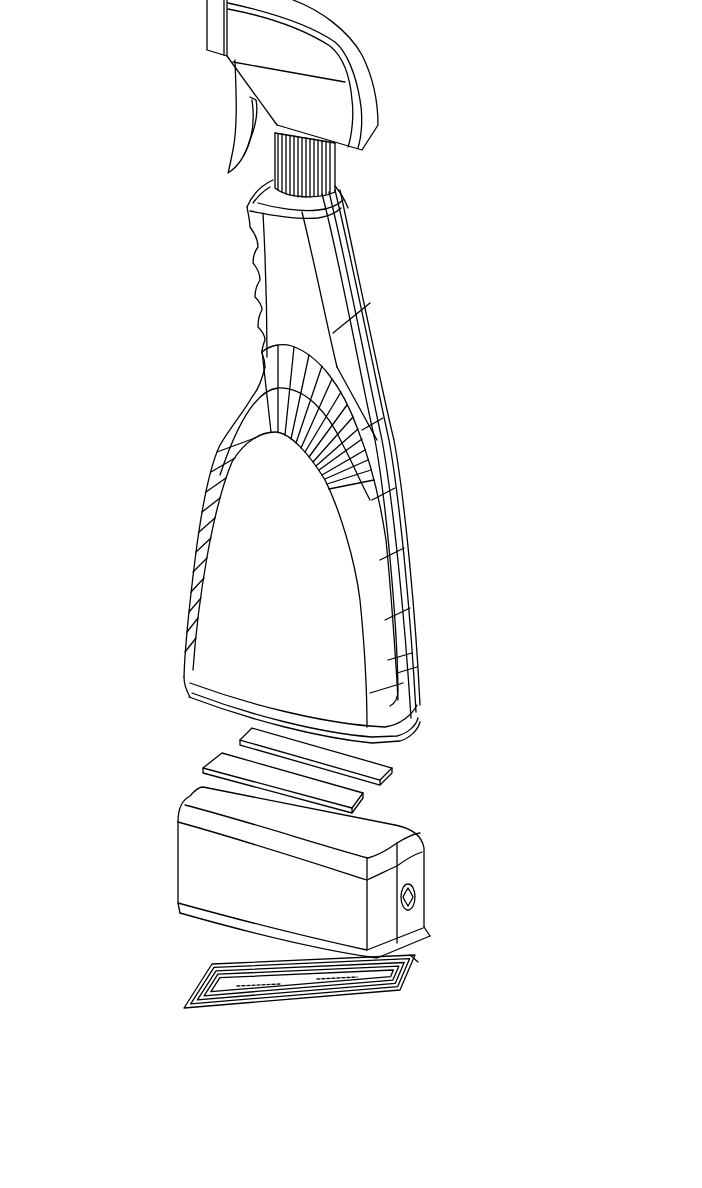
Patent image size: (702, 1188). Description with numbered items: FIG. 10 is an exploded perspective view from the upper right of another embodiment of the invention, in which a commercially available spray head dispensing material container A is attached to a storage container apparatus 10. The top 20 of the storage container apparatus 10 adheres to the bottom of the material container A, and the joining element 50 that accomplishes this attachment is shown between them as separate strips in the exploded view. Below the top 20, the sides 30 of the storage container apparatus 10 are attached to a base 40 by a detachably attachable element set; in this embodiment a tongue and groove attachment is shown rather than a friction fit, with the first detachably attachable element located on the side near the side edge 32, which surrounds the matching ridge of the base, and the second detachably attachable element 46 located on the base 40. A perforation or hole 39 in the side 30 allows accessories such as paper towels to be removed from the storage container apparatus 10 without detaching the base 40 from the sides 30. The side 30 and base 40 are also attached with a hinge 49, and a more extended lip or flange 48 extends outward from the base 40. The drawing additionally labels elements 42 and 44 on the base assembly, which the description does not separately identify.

The material container A is at (444, 420).
The storage container apparatus 10 is at (122, 833).
The top 20 is at (420, 826).
The sides 30 is at (424, 860).
The side edge 32 is at (428, 925).
The perforation or hole 39 is at (421, 893).
The base 40 is at (165, 997).
The pad frame outer ring 42 is at (210, 975).
The pad 44 is at (245, 1035).
The second detachably attachable element 46 is at (292, 1003).
The lip or flange 48 is at (192, 1012).
The hinge 49 is at (427, 950).
The joining element 50 is at (402, 770).